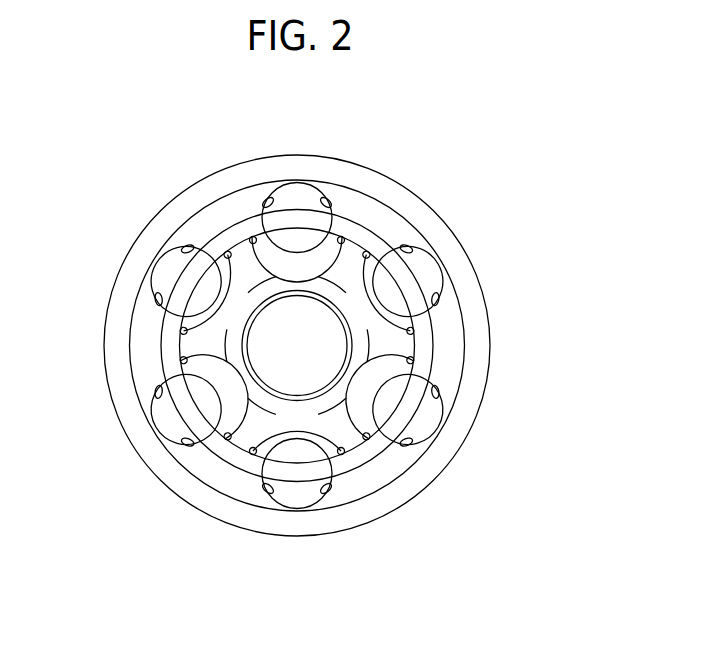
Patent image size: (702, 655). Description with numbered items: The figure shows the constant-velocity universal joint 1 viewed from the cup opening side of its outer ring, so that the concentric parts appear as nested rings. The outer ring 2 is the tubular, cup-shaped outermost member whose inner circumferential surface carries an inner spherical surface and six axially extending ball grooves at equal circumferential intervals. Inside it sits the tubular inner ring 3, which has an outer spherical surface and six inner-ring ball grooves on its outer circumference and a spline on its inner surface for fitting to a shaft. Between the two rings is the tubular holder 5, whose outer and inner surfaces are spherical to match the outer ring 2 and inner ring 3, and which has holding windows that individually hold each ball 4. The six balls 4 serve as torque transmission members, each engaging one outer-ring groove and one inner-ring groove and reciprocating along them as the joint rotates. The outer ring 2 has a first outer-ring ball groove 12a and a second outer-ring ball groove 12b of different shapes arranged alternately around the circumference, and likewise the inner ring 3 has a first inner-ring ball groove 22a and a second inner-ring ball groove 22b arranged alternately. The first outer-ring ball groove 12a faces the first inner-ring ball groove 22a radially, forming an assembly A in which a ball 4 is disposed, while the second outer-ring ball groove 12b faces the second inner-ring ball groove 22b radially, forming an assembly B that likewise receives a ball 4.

The constant-velocity universal joint 1 is at (443, 157).
The outer ring 2 is at (489, 345).
The inner ring 3 is at (168, 362).
The ball 4 is at (298, 200).
The holder 5 is at (197, 358).
The first outer-ring ball groove 12a is at (266, 200).
The second outer-ring ball groove 12b is at (410, 243).
The first inner-ring ball groove 22a is at (329, 204).
The second inner-ring ball groove 22b is at (437, 300).
The assembly A is at (278, 185).
The assembly B is at (438, 256).